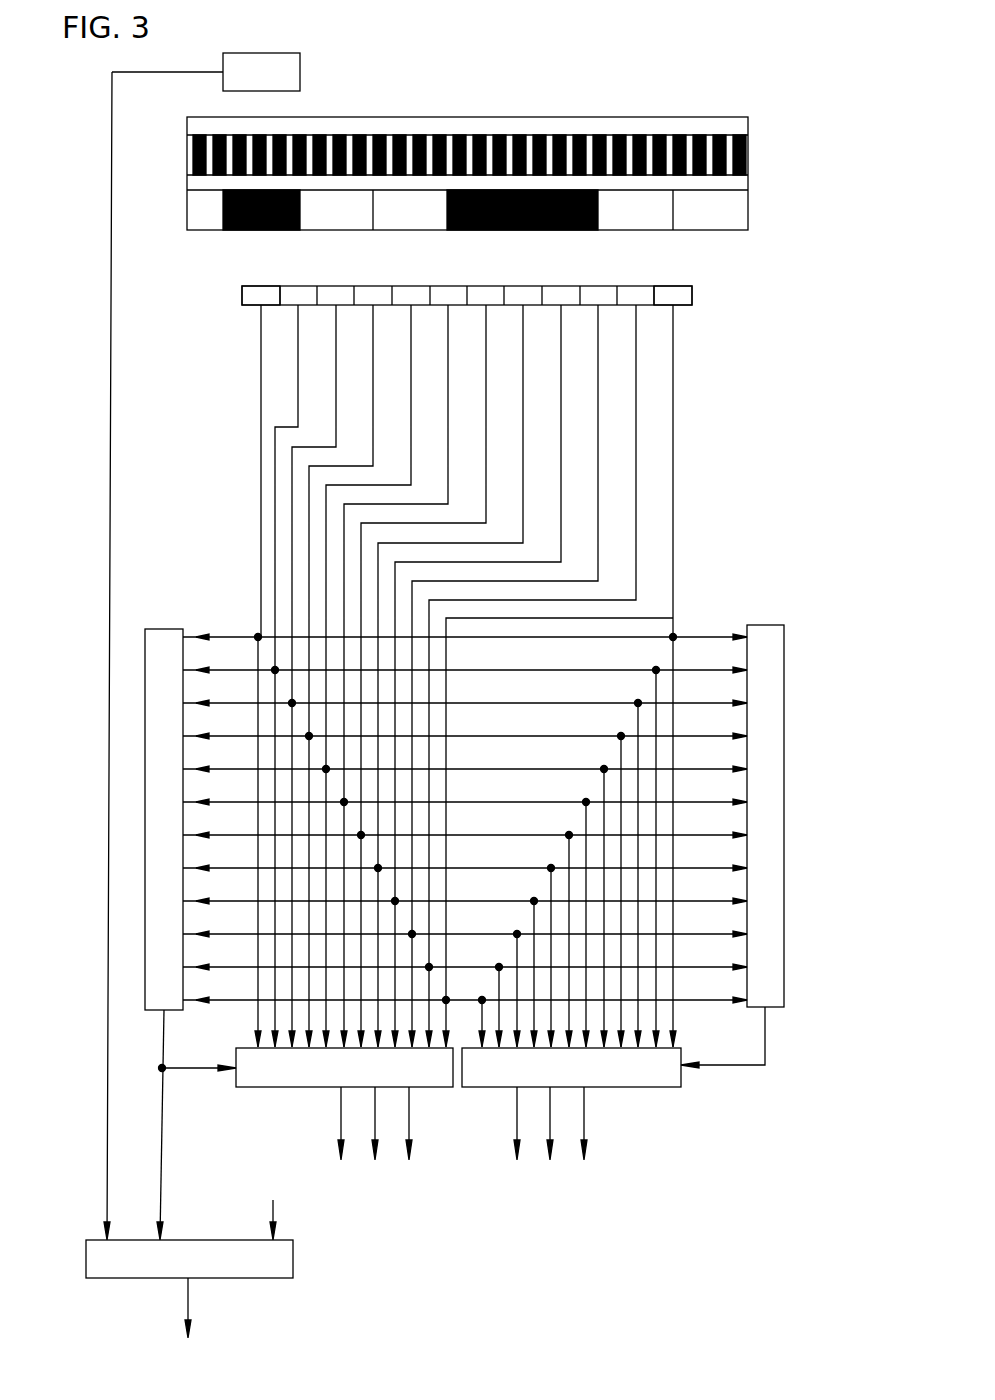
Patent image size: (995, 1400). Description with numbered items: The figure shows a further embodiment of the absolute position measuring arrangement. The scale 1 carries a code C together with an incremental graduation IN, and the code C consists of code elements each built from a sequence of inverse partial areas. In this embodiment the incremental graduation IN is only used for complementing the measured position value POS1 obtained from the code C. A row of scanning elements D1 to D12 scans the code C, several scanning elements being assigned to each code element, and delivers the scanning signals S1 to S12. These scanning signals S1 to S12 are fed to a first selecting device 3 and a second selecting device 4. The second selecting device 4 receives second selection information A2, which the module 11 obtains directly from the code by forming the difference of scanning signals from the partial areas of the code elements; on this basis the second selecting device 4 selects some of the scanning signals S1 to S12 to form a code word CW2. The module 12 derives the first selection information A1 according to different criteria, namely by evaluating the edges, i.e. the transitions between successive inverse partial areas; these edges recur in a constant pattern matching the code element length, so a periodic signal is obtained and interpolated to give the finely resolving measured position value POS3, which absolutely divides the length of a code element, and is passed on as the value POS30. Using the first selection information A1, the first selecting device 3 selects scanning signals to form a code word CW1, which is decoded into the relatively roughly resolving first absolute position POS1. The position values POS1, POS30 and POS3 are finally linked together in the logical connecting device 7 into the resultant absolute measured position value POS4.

The scale 1 is at (516, 145).
The incremental graduation IN is at (748, 148).
The code C is at (728, 212).
The scanning element D1 is at (248, 296).
The scanning element D12 is at (680, 295).
The scanning signal S1 is at (260, 355).
The scanning signal S12 is at (675, 460).
The module 12 is at (165, 648).
The module 11 is at (765, 650).
The first selecting device 3 is at (300, 1072).
The second selecting device 4 is at (657, 1072).
The first selection information A1 is at (198, 1070).
The second selection information A2 is at (765, 1040).
The measured position value POS3 is at (107, 1090).
The position signal from unit 12 POS30 is at (162, 1187).
The first absolute position POS1 is at (273, 1200).
The resultant absolute measured position value POS4 is at (190, 1300).
The code word CW1 is at (427, 1139).
The code word CW2 is at (617, 1133).
The logical connecting device 7 is at (278, 1262).